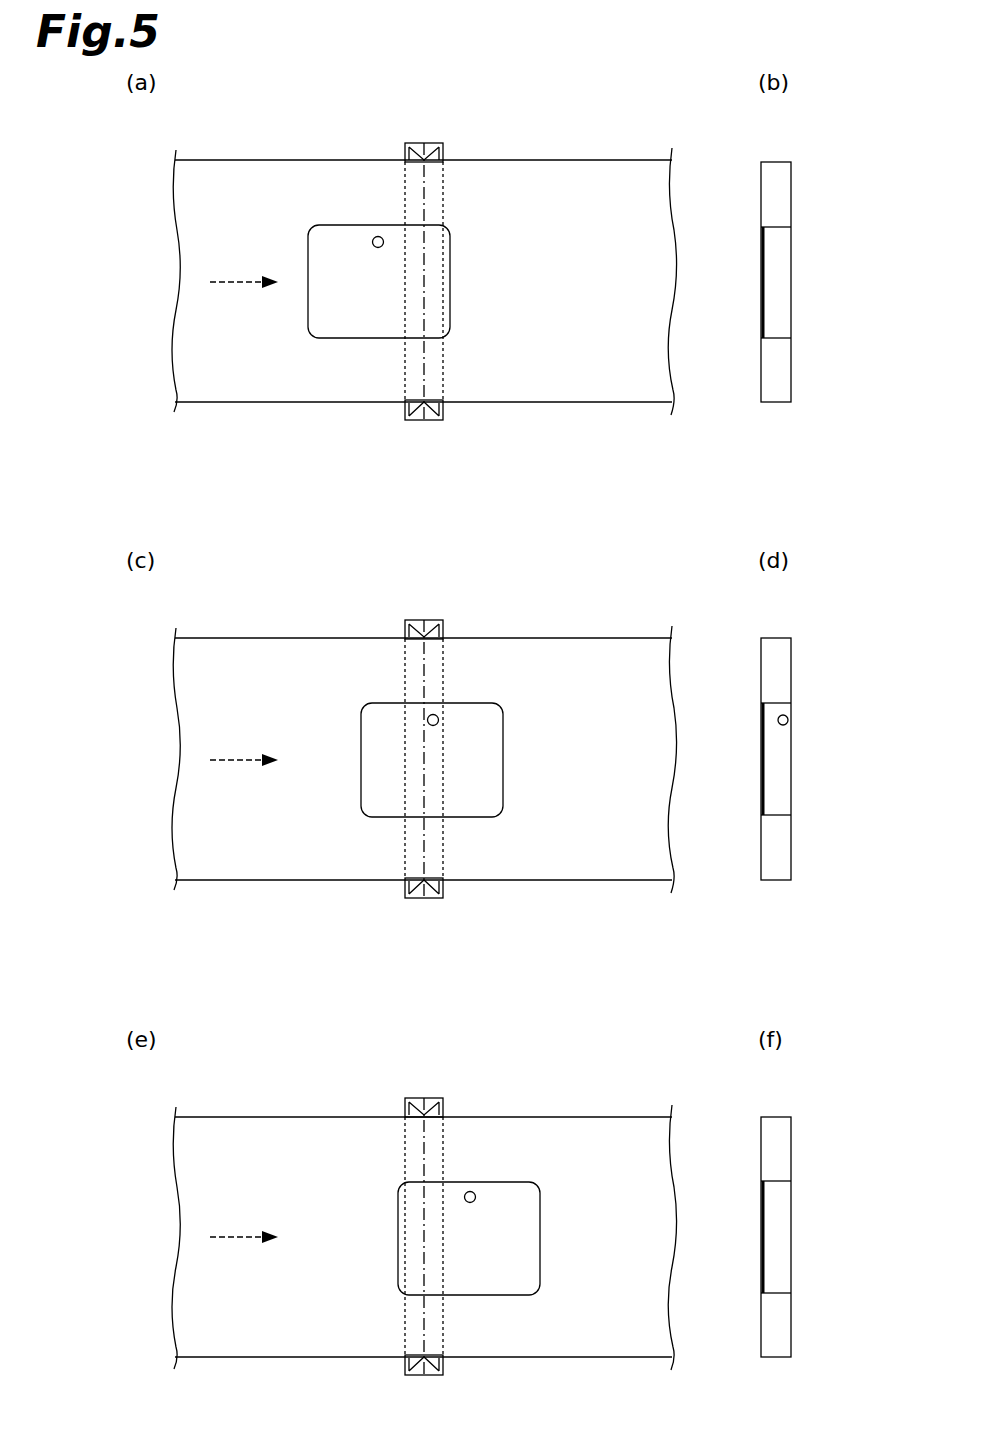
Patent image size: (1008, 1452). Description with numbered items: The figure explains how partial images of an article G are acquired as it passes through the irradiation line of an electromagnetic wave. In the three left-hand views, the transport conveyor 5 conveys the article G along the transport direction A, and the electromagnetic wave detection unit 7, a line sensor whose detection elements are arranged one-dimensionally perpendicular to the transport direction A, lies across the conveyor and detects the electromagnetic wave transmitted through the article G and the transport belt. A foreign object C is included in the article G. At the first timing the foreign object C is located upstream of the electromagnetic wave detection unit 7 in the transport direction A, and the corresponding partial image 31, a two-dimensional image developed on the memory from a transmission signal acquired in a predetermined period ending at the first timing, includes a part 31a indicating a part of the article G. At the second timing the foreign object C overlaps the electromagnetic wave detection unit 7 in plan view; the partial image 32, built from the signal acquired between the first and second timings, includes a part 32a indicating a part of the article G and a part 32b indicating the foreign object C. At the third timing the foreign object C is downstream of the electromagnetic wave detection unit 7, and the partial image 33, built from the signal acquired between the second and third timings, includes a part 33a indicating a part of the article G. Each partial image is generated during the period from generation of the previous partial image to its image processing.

The transport conveyor 5 is at (254, 178).
The electromagnetic wave detection unit 7 is at (427, 143).
The article G is at (333, 246).
The foreign object C is at (378, 236).
The transport direction A is at (238, 284).
The partial image 31 is at (823, 281).
The part indicating a part of the article 31a is at (783, 293).
The partial image 32 is at (823, 759).
The part indicating a part of the article 32a is at (783, 770).
The part indicating a foreign object 32b is at (789, 719).
The partial image 33 is at (823, 1236).
The part indicating a part of the article 33a is at (783, 1248).